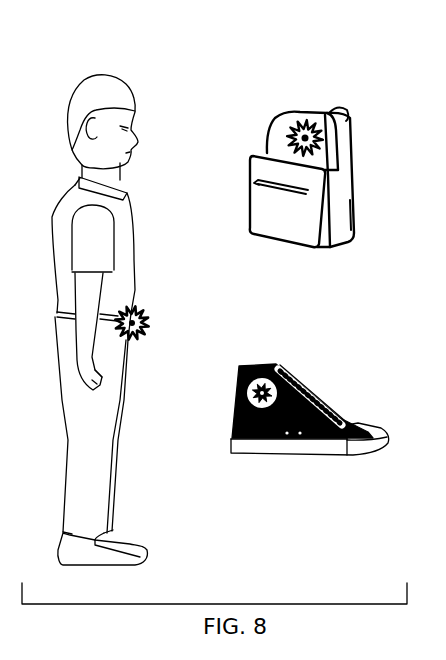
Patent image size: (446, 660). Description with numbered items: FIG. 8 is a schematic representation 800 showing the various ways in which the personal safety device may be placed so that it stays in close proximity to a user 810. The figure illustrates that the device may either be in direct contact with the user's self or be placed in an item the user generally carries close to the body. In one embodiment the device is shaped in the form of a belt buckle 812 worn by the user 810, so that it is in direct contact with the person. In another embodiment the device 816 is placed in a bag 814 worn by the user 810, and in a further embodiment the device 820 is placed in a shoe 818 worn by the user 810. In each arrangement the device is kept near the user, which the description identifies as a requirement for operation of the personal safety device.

The system of wearable items with sensor tags 800 is at (362, 40).
The user 810 is at (64, 205).
The belt buckle 812 is at (148, 327).
The bag 814 is at (253, 218).
The device 816 is at (388, 436).
The shoe 818 is at (298, 122).
The device 820 is at (265, 378).